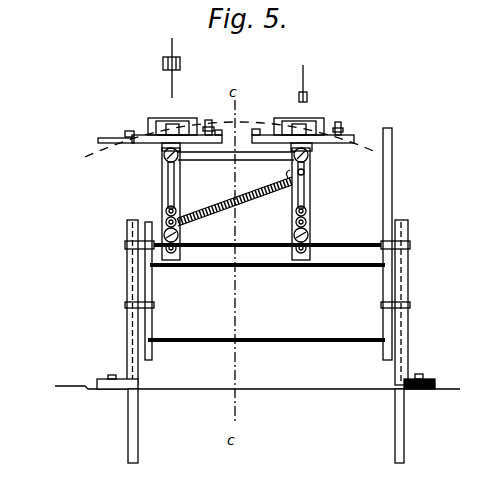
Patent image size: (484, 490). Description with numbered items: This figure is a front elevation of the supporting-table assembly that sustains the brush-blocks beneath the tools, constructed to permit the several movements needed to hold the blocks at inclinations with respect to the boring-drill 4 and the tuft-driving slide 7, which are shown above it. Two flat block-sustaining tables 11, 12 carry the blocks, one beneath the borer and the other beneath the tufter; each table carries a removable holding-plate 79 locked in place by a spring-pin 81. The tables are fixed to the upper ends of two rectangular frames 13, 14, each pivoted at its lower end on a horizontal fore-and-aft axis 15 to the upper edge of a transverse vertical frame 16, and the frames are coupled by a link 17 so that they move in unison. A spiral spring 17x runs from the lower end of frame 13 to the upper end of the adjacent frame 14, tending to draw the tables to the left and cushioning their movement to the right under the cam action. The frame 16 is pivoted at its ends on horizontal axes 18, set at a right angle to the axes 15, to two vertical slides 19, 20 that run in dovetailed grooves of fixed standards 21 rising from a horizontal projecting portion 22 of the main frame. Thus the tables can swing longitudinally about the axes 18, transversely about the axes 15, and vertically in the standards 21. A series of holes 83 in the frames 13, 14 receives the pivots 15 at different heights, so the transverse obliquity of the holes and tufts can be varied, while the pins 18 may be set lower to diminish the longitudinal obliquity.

The boring-drill 4 is at (307, 94).
The tuft-driving slide 7 is at (170, 85).
The block-sustaining table 11 is at (143, 144).
The block-sustaining table 12 is at (325, 143).
The rectangular frame 13 is at (160, 190).
The rectangular frame 14 is at (312, 192).
The fore-and-aft axes 15 is at (184, 242).
The transverse vertical frame 16 is at (156, 266).
The link 17 is at (222, 161).
The spiral spring 17x is at (235, 198).
The horizontal axes 18 is at (128, 246).
The vertical slide 19 is at (128, 426).
The vertical slide 20 is at (405, 426).
The fixed standards 21 is at (128, 340).
The horizontal projecting portion of the main frame 22 is at (282, 391).
The holding-plate 79 is at (148, 140).
The spring-pin 81 is at (207, 122).
The holes 83 is at (173, 213).